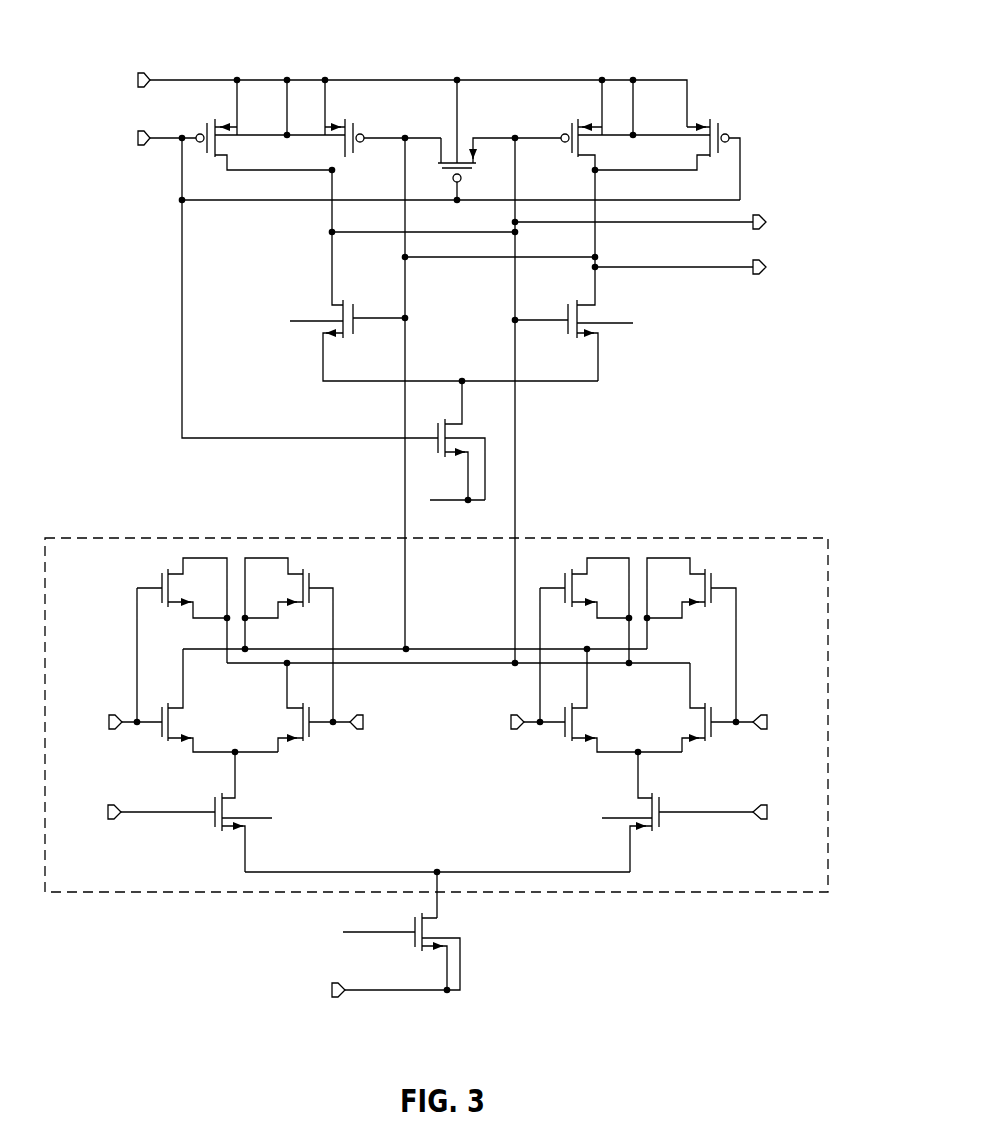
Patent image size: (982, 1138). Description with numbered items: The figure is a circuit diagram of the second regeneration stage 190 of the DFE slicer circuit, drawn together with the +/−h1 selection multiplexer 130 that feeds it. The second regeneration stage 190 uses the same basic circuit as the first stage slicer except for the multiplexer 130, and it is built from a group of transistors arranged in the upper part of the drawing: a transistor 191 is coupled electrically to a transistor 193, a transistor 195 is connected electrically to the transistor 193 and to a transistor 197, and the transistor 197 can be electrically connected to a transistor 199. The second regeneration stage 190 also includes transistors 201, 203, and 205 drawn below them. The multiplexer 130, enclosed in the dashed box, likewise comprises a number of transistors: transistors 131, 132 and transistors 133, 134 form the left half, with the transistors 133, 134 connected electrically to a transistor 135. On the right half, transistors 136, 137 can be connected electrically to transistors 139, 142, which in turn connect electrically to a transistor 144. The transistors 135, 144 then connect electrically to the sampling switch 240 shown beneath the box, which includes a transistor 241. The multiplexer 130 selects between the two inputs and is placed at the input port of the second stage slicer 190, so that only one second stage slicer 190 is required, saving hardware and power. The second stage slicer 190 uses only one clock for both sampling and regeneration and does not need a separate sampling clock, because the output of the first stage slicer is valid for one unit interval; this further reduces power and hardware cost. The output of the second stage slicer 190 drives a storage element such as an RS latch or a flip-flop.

The second regeneration stage 190 is at (462, 253).
The transistor 191 is at (204, 168).
The transistor 193 is at (353, 107).
The transistor 195 is at (463, 120).
The transistor 197 is at (576, 107).
The transistor 199 is at (715, 117).
The transistor 201 is at (314, 335).
The transistor 203 is at (574, 345).
The transistor 205 is at (483, 434).
The multiplexer 130 is at (444, 703).
The transistor 131 is at (161, 608).
The transistor 132 is at (300, 560).
The transistor 133 is at (164, 745).
The transistor 134 is at (280, 717).
The transistor 135 is at (206, 823).
The transistor 136 is at (591, 579).
The transistor 137 is at (720, 572).
The transistor 139 is at (557, 733).
The transistor 142 is at (720, 735).
The transistor 144 is at (670, 824).
The sampling switch 240 is at (444, 929).
The transistor 241 is at (419, 957).